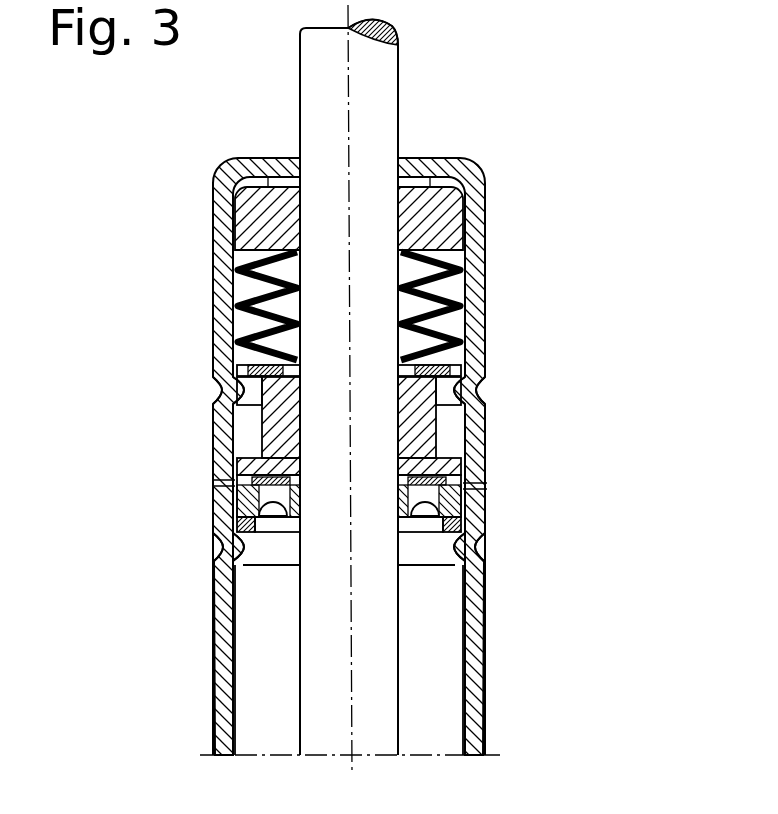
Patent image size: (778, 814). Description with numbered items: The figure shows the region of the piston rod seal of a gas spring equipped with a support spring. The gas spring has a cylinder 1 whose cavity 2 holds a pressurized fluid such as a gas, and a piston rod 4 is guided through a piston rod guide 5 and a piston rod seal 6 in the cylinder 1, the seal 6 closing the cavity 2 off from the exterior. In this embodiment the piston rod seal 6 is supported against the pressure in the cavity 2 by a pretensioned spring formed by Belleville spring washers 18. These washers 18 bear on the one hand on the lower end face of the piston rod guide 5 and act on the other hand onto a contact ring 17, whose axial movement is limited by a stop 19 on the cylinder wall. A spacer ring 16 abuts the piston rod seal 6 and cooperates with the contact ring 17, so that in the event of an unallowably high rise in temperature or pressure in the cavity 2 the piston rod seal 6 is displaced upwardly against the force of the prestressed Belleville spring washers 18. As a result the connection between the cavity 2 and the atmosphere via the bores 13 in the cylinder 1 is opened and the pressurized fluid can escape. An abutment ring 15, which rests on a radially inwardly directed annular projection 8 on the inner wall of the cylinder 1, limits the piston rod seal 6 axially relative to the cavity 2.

The cylinder 1 is at (218, 645).
The cavity 2 is at (443, 640).
The piston rod 4 is at (377, 92).
The piston rod guide 5 is at (460, 182).
The piston rod seal 6 is at (480, 494).
The annular projection 8 is at (475, 548).
The bores 13 is at (215, 483).
The abutment ring 15 is at (233, 533).
The spacer ring 16 is at (432, 424).
The contact ring 17 is at (458, 360).
The Belleville spring washers 18 is at (478, 286).
The stop 19 is at (217, 385).